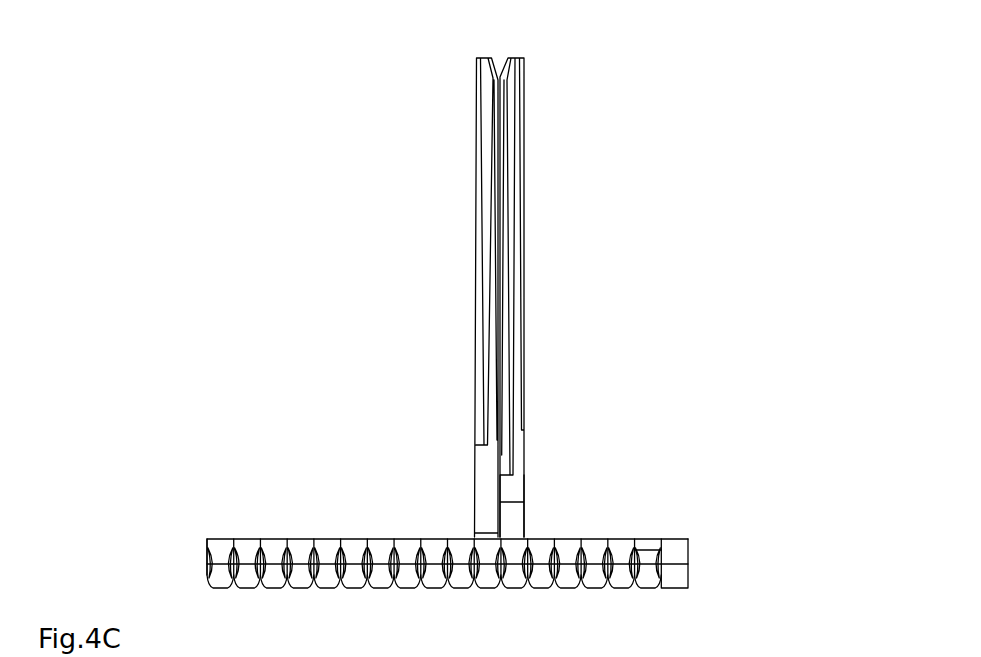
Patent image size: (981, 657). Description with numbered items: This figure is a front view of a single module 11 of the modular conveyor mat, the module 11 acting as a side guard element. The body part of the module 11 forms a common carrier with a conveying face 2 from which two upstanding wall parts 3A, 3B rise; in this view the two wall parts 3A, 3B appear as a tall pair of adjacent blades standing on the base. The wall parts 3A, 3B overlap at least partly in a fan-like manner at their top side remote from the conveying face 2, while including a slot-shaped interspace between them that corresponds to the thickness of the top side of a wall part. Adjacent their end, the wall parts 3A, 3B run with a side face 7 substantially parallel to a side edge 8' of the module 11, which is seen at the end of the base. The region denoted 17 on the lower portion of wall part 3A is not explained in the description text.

The module 11 is at (123, 142).
The conveying face 2 is at (238, 538).
The side face 7 is at (447, 610).
The side edge 8' is at (757, 560).
The wall part 3A is at (525, 138).
The wall part 3B is at (476, 139).
The retention section 17 is at (506, 495).